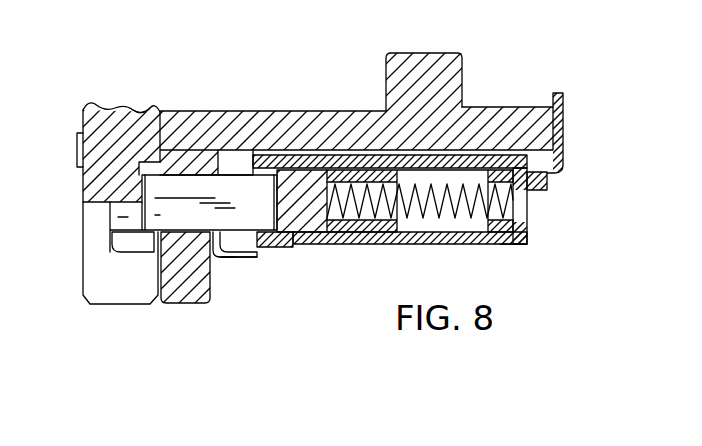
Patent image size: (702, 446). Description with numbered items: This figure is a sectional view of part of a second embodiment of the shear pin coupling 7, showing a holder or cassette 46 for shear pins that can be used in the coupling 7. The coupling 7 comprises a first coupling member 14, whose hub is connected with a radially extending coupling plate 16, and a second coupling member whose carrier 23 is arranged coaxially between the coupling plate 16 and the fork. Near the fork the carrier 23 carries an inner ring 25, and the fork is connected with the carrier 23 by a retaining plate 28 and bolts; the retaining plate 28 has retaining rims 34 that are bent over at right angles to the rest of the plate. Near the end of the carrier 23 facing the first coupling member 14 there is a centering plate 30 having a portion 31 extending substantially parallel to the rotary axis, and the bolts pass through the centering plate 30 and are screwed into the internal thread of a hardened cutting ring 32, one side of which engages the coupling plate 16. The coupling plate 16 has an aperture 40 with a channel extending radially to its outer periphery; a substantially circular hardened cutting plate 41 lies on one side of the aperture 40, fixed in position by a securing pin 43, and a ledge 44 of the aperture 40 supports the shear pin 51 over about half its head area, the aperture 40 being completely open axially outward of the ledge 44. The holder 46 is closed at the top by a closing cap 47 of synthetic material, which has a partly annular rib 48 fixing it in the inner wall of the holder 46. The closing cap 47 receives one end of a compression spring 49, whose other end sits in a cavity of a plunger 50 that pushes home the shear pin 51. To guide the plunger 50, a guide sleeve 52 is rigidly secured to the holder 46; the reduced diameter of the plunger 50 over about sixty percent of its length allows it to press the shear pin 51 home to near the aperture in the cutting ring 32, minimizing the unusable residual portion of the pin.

The shear pin coupling 7 is at (501, 88).
The first coupling member 14 is at (163, 80).
The coupling plate 16 is at (105, 100).
The carrier 23 is at (297, 112).
The inner ring 25 is at (450, 31).
The retaining plate 28 is at (562, 97).
The centering plate 30 is at (224, 258).
The portion 31 is at (247, 258).
The cutting ring 32 is at (195, 303).
The retaining rims 34 is at (540, 194).
The aperture 40 is at (88, 253).
The cutting plate 41 is at (140, 255).
The securing pin 43 is at (77, 141).
The ledge 44 is at (137, 172).
The holder 46 is at (433, 235).
The closing cap 47 is at (530, 226).
The partly annular rib 48 is at (507, 245).
The compression spring 49 is at (467, 222).
The plunger 50 is at (365, 245).
The shear pin 51 is at (227, 187).
The guide sleeve 52 is at (292, 243).